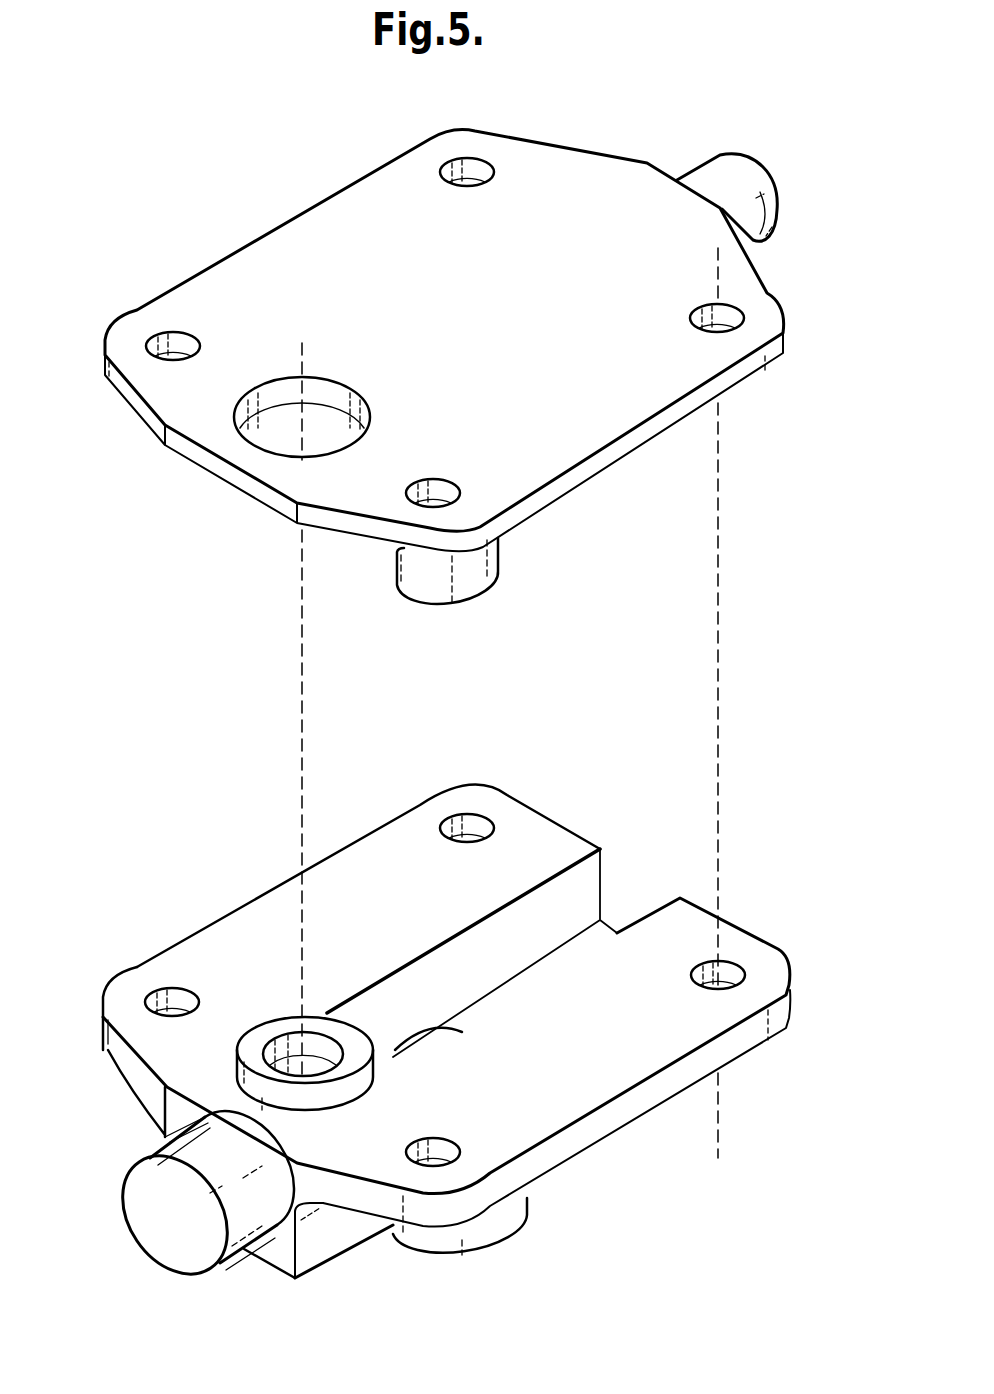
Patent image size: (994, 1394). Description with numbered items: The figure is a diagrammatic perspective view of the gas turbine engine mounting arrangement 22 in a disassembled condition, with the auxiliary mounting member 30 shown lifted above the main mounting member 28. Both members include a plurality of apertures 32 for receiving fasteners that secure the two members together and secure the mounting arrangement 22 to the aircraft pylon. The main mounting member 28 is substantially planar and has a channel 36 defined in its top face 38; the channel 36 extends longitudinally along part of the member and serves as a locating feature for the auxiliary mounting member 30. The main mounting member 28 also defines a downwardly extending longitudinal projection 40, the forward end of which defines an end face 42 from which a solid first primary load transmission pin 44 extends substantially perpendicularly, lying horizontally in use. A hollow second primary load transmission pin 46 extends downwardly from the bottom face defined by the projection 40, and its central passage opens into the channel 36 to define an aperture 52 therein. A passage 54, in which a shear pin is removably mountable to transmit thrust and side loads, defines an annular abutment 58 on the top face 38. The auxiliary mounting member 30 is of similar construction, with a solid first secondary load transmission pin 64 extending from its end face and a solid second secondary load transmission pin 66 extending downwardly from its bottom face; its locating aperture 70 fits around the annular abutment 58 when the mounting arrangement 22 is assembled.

The mounting arrangement 22 is at (630, 84).
The main mounting member 28 is at (652, 1100).
The auxiliary mounting member 30 is at (332, 211).
The apertures 32 is at (475, 166).
The channel 36 is at (600, 930).
The top face 38 is at (233, 948).
The longitudinal projection 40 is at (345, 1240).
The end face 42 is at (273, 1261).
The first primary load transmission pin 44 is at (167, 1237).
The second primary load transmission pin 46 is at (505, 1228).
The aperture 52 is at (434, 1038).
The passage 54 is at (280, 1050).
The annular abutment 58 is at (337, 1100).
The first secondary load transmission pin 64 is at (737, 173).
The second secondary load transmission pin 66 is at (476, 567).
The locating aperture 70 is at (268, 420).